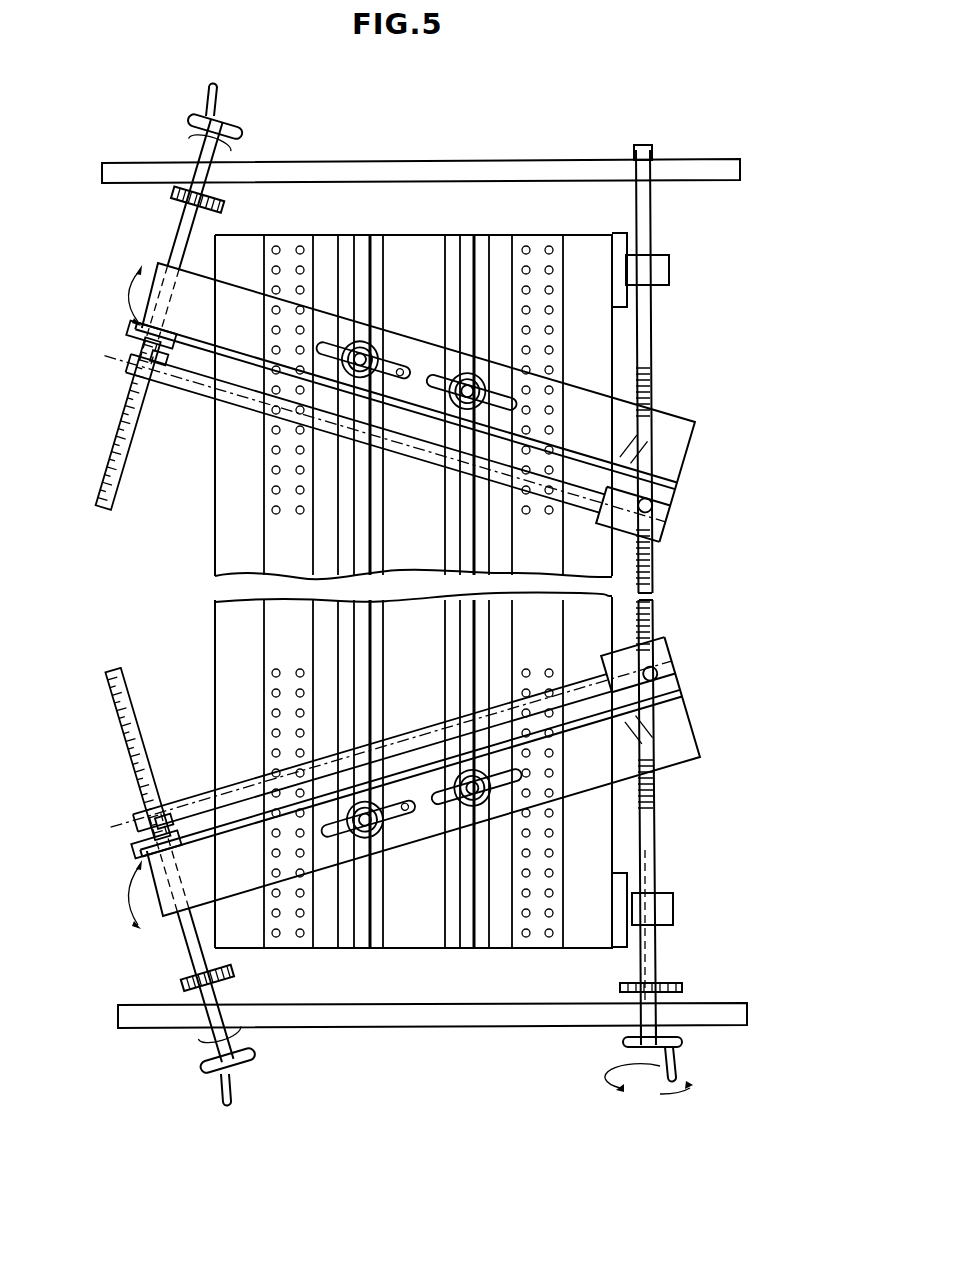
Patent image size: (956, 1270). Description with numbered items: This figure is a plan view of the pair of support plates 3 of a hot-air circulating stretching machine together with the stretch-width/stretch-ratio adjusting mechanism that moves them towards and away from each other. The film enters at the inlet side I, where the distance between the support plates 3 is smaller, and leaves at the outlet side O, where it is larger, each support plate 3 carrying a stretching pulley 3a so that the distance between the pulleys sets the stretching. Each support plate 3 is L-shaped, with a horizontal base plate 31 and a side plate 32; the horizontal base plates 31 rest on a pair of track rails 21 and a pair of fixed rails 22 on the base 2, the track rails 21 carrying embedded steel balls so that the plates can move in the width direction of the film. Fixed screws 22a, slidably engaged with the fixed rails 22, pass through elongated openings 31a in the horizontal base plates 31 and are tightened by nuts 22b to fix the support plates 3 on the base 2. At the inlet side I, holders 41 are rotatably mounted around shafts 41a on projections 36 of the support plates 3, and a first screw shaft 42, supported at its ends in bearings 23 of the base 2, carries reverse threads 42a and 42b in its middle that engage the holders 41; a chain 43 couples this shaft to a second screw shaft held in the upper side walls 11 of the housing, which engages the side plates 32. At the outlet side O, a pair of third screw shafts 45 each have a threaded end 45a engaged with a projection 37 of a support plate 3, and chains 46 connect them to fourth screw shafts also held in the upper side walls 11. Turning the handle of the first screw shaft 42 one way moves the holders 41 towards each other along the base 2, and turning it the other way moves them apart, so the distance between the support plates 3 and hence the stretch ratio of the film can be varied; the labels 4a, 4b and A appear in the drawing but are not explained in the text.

The base 2 is at (418, 948).
The support plate 3 is at (439, 589).
The stretching pulley 3a is at (180, 375).
The handle 4a is at (616, 1046).
The handle 4b is at (262, 1060).
The upper side wall 11 is at (463, 160).
The track rail 21 is at (294, 946).
The fixed rail 22 is at (363, 946).
The fixed screw 22a is at (378, 352).
The nut 22b is at (372, 343).
The bearing 23 is at (672, 270).
The horizontal base plate 31 is at (678, 458).
The elongated opening 31a is at (400, 380).
The side plate 32 is at (672, 480).
The projection 36 is at (670, 508).
The projection 37 is at (135, 345).
The holder 41 is at (693, 634).
The shaft 41a is at (657, 516).
The first screw shaft 42 is at (656, 862).
The reverse thread 42a is at (657, 790).
The reverse thread 42b is at (655, 392).
The chain 43 is at (684, 987).
The third screw shaft 45 is at (200, 230).
The thread end 45a is at (128, 420).
The chain 46 is at (172, 197).
The outlet side O is at (206, 591).
The inlet side I is at (674, 593).
The direction A is at (144, 948).